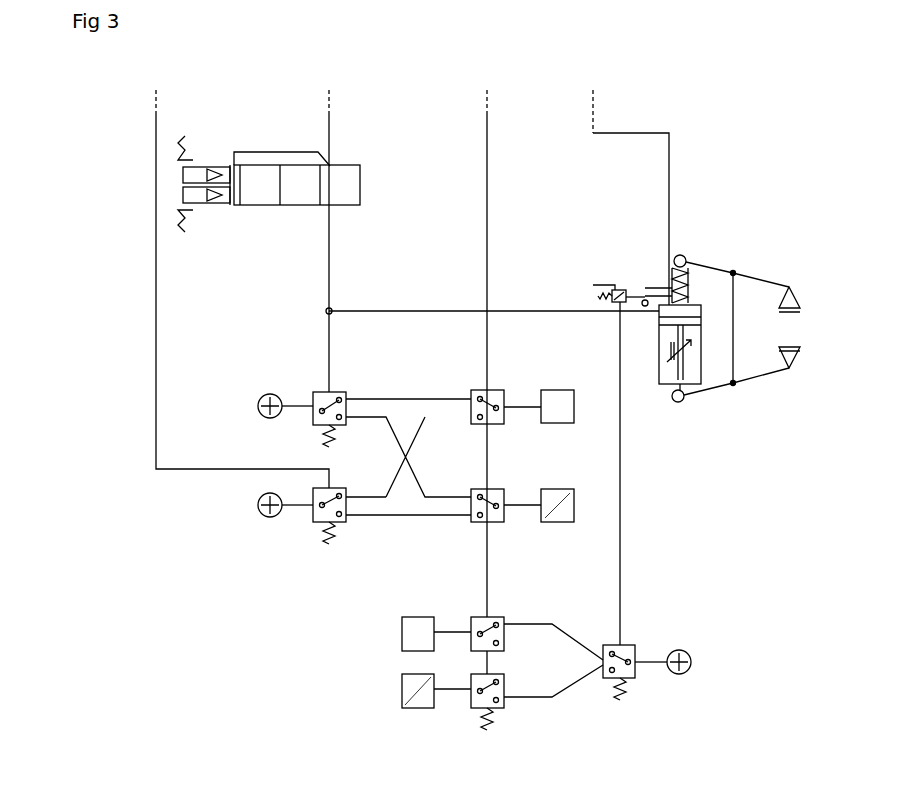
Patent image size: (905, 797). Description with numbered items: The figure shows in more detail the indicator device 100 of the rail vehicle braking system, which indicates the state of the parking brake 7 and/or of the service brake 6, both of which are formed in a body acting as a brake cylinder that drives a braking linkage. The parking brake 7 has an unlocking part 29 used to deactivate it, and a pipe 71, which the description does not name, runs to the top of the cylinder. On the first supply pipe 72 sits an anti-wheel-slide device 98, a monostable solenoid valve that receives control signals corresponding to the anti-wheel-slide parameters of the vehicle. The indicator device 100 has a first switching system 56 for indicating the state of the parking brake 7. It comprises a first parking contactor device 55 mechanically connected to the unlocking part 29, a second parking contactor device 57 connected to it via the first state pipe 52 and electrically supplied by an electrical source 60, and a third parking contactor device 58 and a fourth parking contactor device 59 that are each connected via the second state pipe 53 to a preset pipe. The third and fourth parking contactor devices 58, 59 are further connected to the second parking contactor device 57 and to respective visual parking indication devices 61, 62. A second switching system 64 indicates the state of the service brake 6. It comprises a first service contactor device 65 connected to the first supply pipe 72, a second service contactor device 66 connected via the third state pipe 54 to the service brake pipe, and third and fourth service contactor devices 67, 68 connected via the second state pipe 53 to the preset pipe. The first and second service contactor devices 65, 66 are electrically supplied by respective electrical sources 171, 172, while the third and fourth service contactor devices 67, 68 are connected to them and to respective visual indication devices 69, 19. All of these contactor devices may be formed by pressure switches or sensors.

The service brake 6 is at (660, 384).
The parking brake 7 is at (707, 263).
The visual indication device 19 is at (558, 488).
The unlocking part 29 is at (641, 287).
The first state pipe 52 is at (625, 508).
The second state pipe 53 is at (487, 195).
The third state pipe 54 is at (155, 345).
The first parking contactor device 55 is at (598, 285).
The first switching system 56 is at (322, 728).
The second parking contactor device 57 is at (633, 645).
The third parking contactor device 58 is at (505, 618).
The fourth parking contactor device 59 is at (505, 678).
The electrical source 60 is at (692, 656).
The visual parking indication device 61 is at (400, 631).
The visual parking indication device 62 is at (400, 693).
The second switching system 64 is at (213, 507).
The first service contactor device 65 is at (318, 390).
The second service contactor device 66 is at (318, 530).
The third service contactor device 67 is at (477, 389).
The fourth service contactor device 68 is at (476, 525).
The visual indication device 69 is at (558, 389).
The pressure line 71 is at (631, 133).
The first supply pipe 72 is at (329, 268).
The anti-wheel-slide device 98 is at (350, 165).
The indicator device 100 is at (272, 632).
The electrical source 171 is at (262, 397).
The electrical source 172 is at (261, 514).